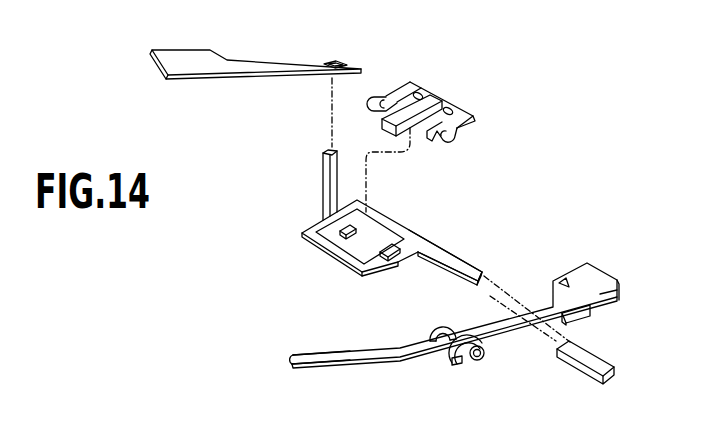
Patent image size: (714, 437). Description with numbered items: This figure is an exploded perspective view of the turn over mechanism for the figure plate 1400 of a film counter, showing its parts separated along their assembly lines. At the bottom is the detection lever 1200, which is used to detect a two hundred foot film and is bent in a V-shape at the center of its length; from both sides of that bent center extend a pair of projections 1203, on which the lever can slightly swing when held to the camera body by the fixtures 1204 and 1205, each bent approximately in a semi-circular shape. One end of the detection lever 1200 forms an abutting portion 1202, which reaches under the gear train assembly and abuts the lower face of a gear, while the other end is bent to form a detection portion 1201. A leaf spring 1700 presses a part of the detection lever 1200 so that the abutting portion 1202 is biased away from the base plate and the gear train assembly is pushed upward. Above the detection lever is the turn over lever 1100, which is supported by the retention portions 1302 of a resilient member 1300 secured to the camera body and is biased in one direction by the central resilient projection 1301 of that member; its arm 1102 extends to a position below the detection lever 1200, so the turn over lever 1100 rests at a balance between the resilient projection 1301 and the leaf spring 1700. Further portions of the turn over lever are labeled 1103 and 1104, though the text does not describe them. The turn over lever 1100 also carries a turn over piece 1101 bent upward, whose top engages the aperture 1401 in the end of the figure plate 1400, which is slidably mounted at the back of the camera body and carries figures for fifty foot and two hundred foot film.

The turn over lever 1100 is at (376, 228).
The turn over piece 1101 is at (326, 172).
The arm 1102 is at (455, 257).
The tab 1103 is at (380, 260).
The tab 1104 is at (346, 231).
The detection lever 1200 is at (460, 328).
The detection portion 1201 is at (590, 309).
The abutting portion 1202 is at (311, 360).
The projections 1203 is at (476, 363).
The fixture 1204 is at (441, 320).
The fixture 1205 is at (457, 363).
The resilient member 1300 is at (429, 126).
The central resilient projection 1301 is at (392, 128).
The retention portions 1302 is at (430, 140).
The figure plate 1400 is at (268, 55).
The aperture 1401 is at (339, 62).
The leaf spring 1700 is at (593, 358).